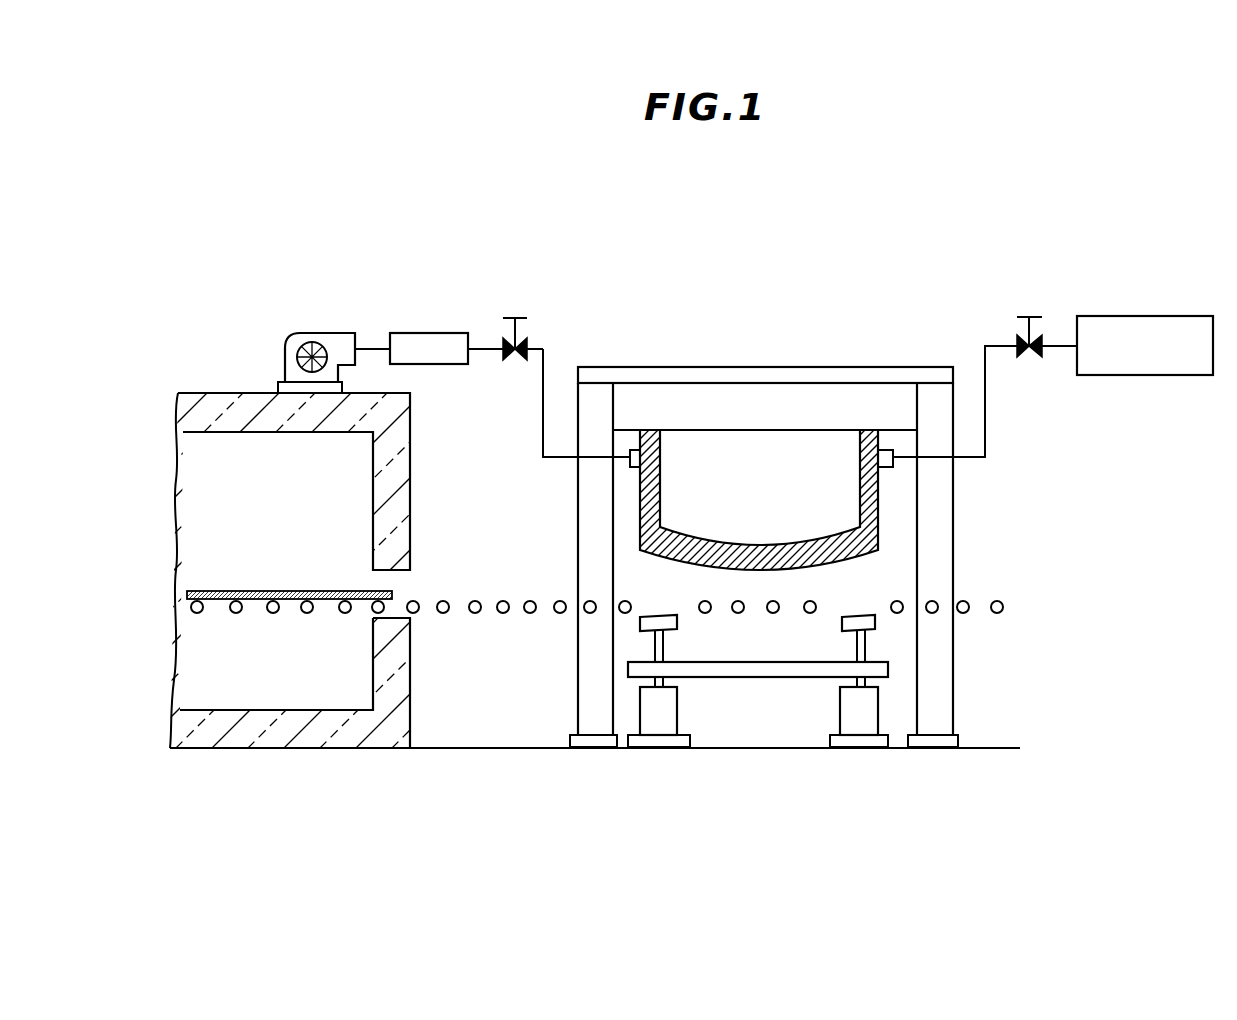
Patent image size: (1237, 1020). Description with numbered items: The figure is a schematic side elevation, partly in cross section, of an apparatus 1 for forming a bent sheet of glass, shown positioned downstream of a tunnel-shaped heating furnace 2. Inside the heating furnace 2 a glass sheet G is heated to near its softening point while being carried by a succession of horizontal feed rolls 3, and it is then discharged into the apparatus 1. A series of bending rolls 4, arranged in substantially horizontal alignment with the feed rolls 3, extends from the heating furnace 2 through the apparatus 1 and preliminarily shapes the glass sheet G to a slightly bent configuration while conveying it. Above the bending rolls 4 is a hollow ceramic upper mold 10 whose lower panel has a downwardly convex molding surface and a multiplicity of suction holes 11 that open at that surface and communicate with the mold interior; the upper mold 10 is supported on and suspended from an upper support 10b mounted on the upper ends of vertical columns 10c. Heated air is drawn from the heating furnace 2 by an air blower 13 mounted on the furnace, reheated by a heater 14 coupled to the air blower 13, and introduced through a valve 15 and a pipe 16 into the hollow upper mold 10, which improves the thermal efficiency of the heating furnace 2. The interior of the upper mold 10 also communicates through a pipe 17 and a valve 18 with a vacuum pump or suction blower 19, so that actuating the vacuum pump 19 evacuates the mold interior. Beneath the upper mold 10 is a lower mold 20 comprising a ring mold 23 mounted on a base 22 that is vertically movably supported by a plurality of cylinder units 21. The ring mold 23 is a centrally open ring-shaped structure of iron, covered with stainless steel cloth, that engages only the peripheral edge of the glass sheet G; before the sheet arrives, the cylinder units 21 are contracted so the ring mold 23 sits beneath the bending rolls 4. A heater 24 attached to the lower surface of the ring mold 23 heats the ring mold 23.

The apparatus 1 is at (808, 344).
The heating furnace 2 is at (224, 395).
The feed rolls 3 is at (273, 613).
The bending rolls 4 is at (530, 601).
The glass sheet G is at (243, 591).
The upper mold 10 is at (878, 495).
The upper support 10b is at (692, 367).
The vertical columns 10c is at (578, 695).
The suction holes 11 is at (722, 540).
The air blower 13 is at (340, 332).
The heater 14 is at (428, 333).
The valve 15 is at (527, 342).
The pipe 16 is at (543, 420).
The pipe 17 is at (985, 422).
The valve 18 is at (1028, 317).
The vacuum pump 19 is at (1145, 318).
The lower mold 20 is at (805, 678).
The cylinder units 21 is at (658, 725).
The base 22 is at (730, 678).
The ring mold 23 is at (872, 615).
The heater 24 is at (876, 630).